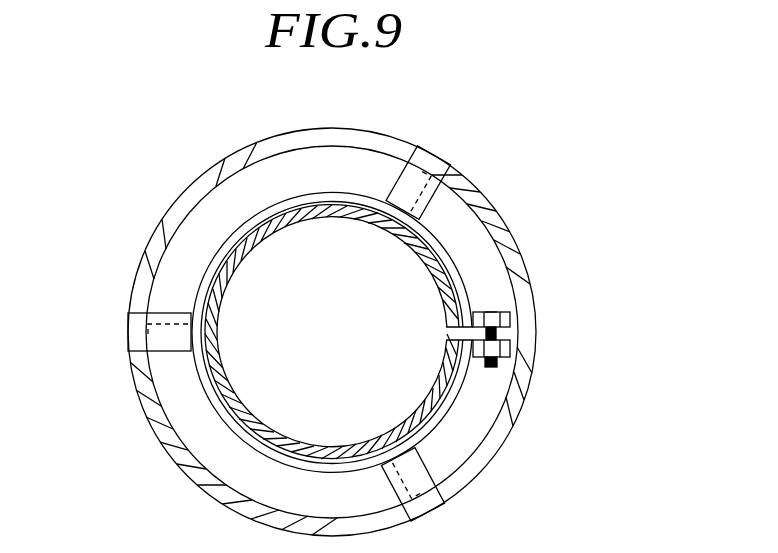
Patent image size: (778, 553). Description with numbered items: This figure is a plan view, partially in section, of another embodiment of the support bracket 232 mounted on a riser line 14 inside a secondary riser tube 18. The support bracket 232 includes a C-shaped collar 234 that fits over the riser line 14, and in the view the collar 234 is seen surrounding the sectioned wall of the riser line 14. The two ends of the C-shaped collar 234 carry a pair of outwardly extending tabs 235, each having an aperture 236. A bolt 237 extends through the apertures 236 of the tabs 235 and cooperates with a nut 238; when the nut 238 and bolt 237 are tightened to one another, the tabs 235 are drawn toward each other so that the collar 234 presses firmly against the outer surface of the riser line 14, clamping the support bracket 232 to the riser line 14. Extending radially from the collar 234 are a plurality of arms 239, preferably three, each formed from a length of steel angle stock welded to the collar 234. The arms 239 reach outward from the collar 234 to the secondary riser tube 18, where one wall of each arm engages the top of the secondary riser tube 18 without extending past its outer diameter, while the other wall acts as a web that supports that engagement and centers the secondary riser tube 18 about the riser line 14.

The riser line 14 is at (215, 275).
The secondary riser tube 18 is at (473, 184).
The support bracket 232 is at (366, 360).
The C-shaped collar 234 is at (433, 425).
The outwardly extending tabs 235 is at (510, 323).
The aperture 236 is at (510, 315).
The bolt 237 is at (489, 311).
The nut 238 is at (491, 367).
The arms 239 is at (410, 182).